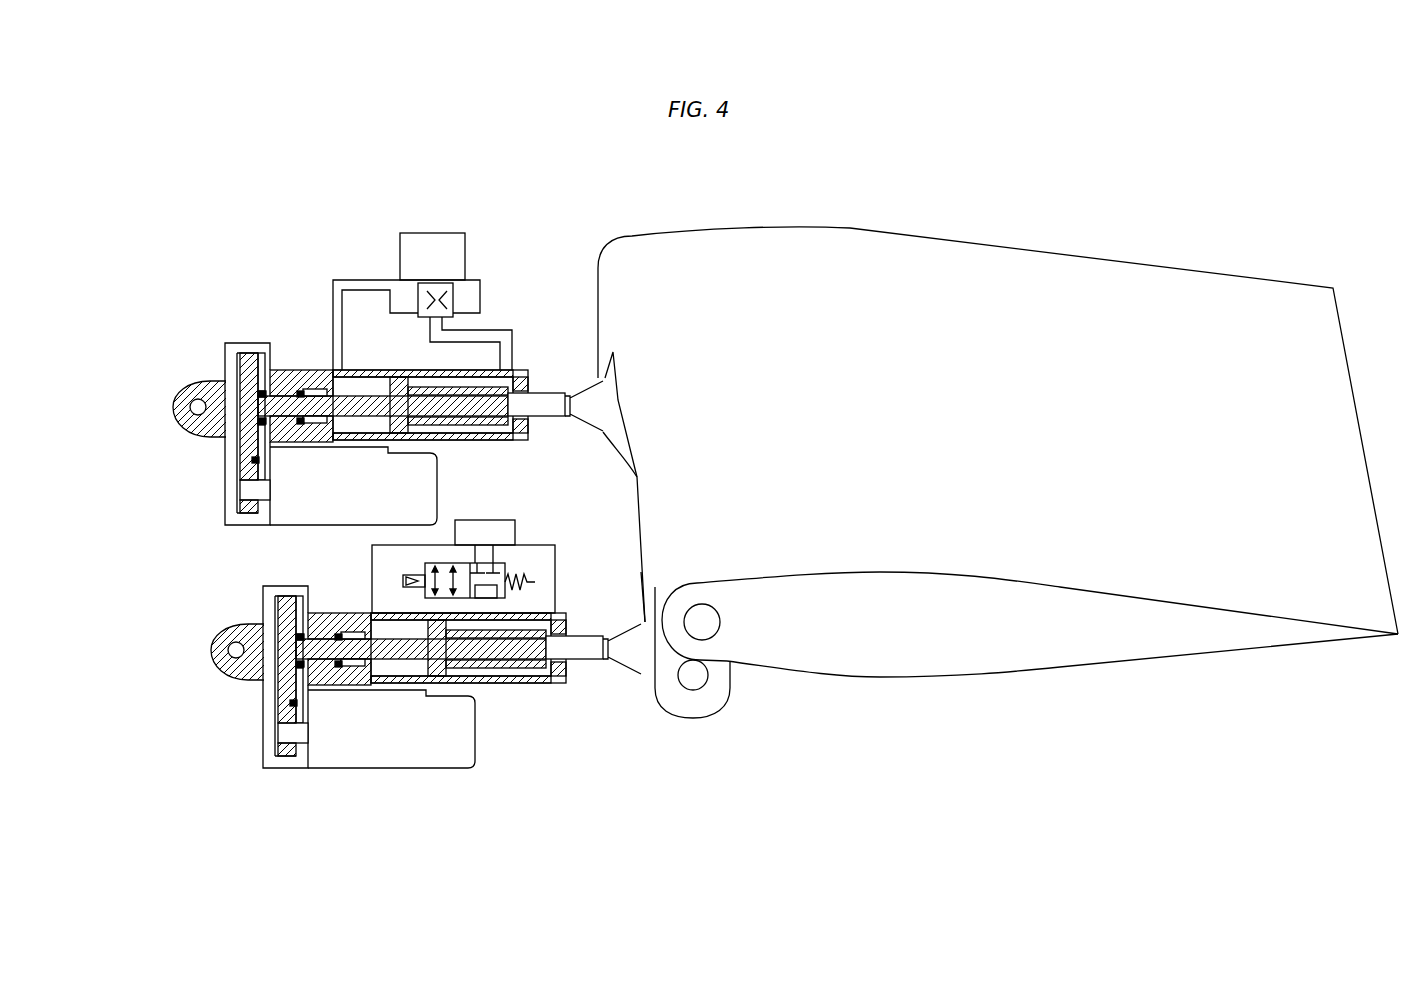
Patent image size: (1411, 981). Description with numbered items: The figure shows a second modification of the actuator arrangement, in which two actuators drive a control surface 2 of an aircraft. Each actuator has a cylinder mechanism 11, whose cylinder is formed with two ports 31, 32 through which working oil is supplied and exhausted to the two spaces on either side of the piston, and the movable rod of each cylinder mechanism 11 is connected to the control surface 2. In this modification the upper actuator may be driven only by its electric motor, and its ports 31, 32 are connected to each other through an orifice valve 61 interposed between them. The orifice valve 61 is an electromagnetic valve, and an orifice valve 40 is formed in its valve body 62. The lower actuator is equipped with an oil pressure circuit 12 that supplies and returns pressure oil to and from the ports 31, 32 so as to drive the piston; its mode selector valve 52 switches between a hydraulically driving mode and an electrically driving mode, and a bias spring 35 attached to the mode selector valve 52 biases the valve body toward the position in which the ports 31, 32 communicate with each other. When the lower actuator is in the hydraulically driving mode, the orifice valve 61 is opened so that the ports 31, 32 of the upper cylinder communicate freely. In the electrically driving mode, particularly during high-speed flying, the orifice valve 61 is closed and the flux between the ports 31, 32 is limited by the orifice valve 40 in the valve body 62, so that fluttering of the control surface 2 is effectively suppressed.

The control surface 2 is at (1138, 282).
The cylinder mechanism 11 is at (329, 383).
The oil pressure circuit 12 is at (367, 648).
The port 31 is at (342, 368).
The port 32 is at (508, 368).
The bias spring 35 is at (562, 557).
The orifice valve 40 is at (456, 300).
The mode selector valve 52 is at (426, 566).
The orifice valve 61 is at (383, 257).
The valve body 62 is at (415, 301).